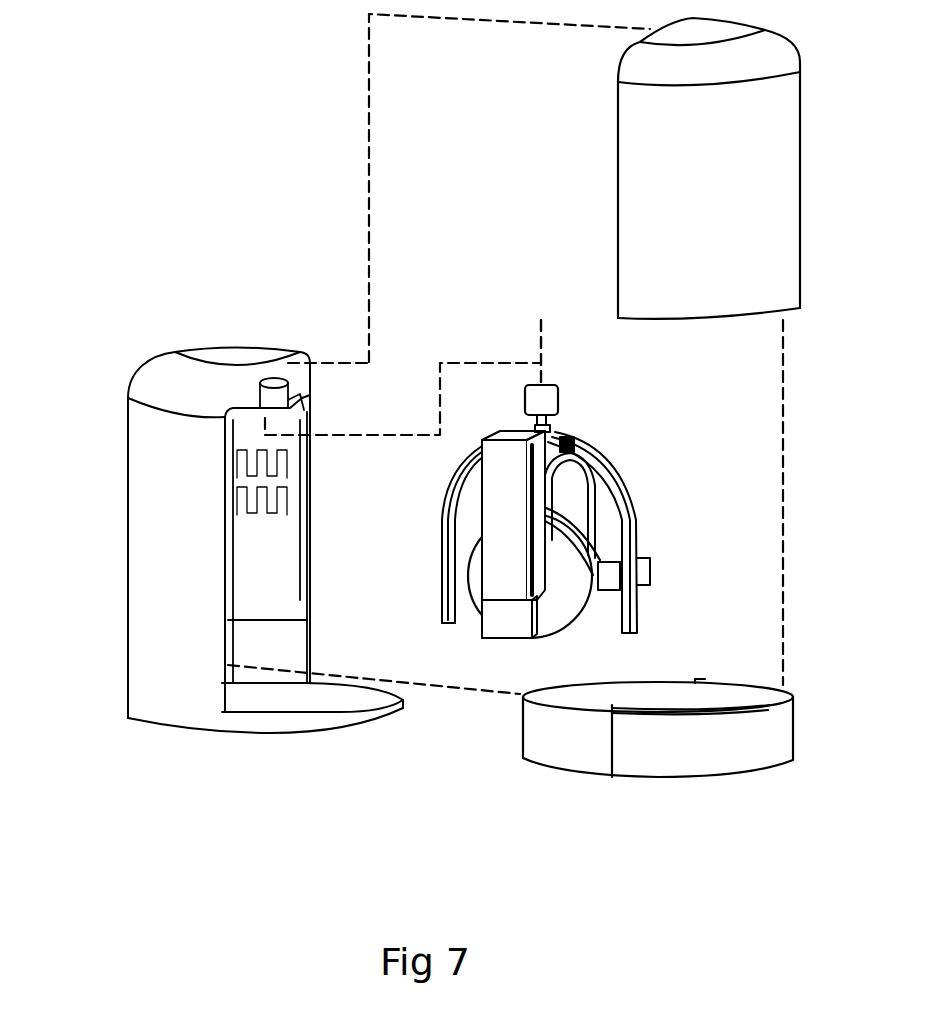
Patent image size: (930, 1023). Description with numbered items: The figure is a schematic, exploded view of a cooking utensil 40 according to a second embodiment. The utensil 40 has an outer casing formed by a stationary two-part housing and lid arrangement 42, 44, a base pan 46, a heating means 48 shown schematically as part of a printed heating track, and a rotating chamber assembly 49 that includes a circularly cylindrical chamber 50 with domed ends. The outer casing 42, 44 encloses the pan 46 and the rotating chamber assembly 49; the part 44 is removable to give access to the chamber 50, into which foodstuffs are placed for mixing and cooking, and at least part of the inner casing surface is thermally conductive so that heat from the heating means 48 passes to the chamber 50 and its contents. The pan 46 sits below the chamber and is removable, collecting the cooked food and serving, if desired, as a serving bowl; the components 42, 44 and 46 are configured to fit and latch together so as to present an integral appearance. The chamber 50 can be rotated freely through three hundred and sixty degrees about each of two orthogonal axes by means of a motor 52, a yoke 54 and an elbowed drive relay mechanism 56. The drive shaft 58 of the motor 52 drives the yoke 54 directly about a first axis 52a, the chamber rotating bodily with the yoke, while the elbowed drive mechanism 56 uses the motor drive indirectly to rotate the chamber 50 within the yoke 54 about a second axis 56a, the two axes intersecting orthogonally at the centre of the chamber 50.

The utensil 40 is at (92, 428).
The housing 42 is at (138, 527).
The lid 44 is at (747, 143).
The base pan 46 is at (773, 737).
The heating means 48 is at (273, 458).
The rotating chamber assembly 49 is at (675, 472).
The chamber 50 is at (558, 617).
The motor 52 is at (552, 400).
The first axis 52a is at (580, 352).
The yoke 54 is at (503, 618).
The elbowed drive relay mechanism 56 is at (490, 494).
The second axis 56a is at (472, 603).
The drive shaft 58 is at (548, 423).